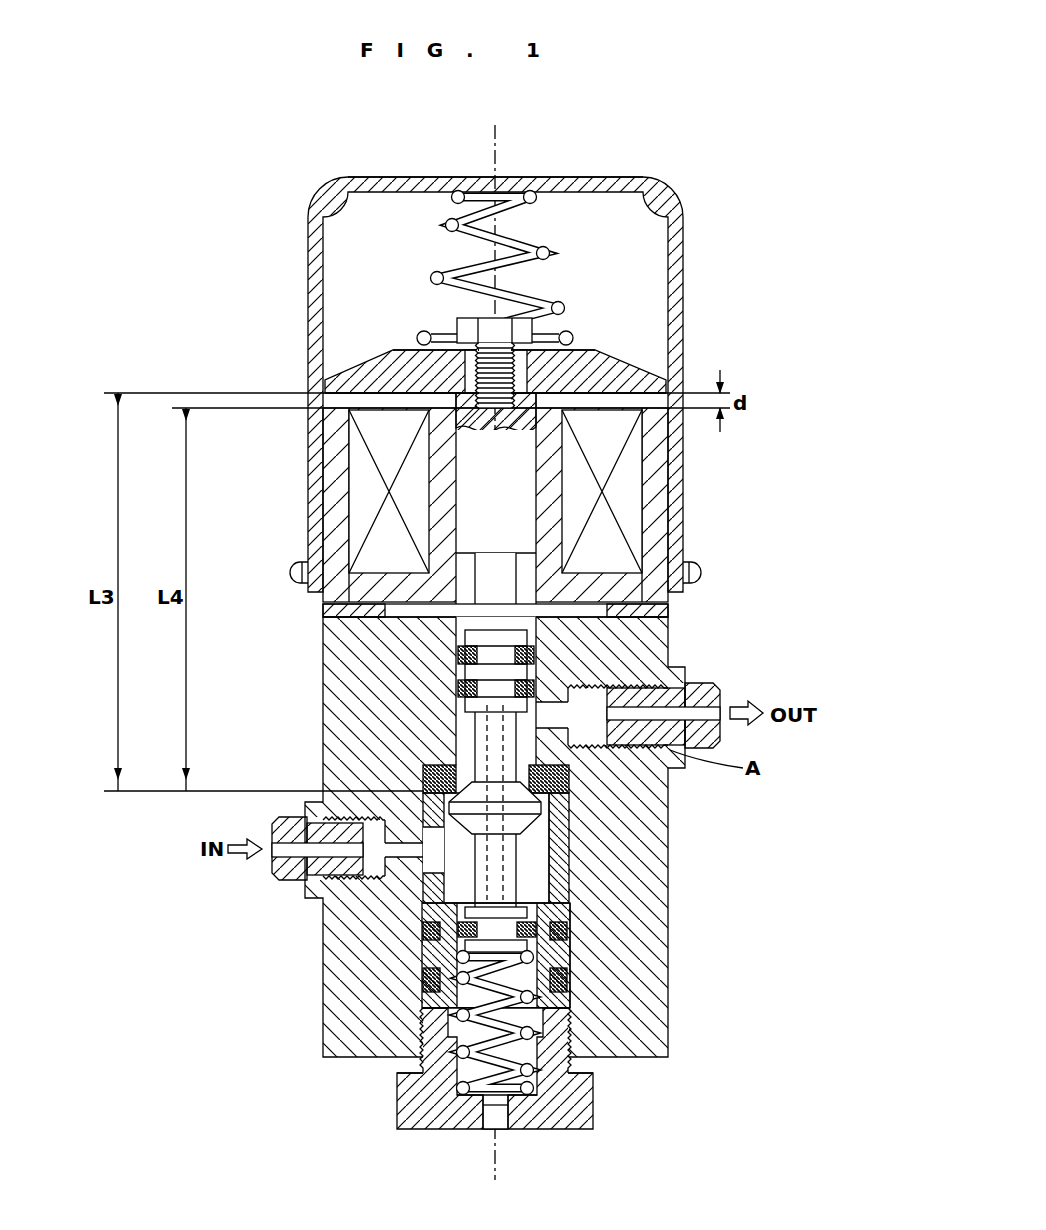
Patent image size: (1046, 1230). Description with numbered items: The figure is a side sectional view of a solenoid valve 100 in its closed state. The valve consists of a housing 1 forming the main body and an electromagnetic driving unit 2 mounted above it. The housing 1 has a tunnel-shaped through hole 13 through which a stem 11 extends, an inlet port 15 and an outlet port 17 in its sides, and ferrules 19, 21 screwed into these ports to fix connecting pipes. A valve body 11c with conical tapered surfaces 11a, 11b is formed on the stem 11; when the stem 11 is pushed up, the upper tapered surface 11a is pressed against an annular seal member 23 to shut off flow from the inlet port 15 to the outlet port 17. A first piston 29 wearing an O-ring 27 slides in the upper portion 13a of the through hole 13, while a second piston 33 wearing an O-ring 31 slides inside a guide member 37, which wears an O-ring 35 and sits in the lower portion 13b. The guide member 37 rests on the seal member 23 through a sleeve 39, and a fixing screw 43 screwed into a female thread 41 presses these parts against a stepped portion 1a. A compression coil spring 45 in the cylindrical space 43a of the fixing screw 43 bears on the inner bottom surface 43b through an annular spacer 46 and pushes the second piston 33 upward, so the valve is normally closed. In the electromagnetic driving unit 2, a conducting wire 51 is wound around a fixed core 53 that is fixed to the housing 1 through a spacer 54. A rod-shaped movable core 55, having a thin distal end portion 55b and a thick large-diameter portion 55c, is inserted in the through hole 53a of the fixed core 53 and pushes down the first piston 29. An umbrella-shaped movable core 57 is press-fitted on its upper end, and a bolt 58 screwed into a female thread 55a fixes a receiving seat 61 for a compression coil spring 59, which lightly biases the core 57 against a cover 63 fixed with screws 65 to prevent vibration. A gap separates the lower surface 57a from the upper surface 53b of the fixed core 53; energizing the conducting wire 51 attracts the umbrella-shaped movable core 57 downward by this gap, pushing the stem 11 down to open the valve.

The solenoid valve 100 is at (686, 130).
The housing 1 is at (672, 912).
The stepped portion 1a is at (435, 747).
The electromagnetic driving unit 2 is at (686, 300).
The stem 11 is at (405, 850).
The upper tapered surface 11a is at (542, 806).
The lower tapered surface 11b is at (520, 832).
The valve body 11c is at (542, 813).
The through hole 13 is at (537, 890).
The upper portion of the through hole 13a is at (540, 632).
The lower portion of the through hole 13b is at (565, 1000).
The inlet port 15 is at (396, 882).
The outlet port 17 is at (556, 702).
The ferrule 19 is at (283, 822).
The ferrule 21 is at (706, 742).
The seal member 23 is at (430, 777).
The O-ring 27 is at (462, 655).
The first piston 29 is at (462, 688).
The O-ring 31 is at (522, 930).
The second piston 33 is at (566, 934).
The O-ring 35 is at (567, 980).
The guide member 37 is at (540, 1035).
The sleeve 39 is at (551, 862).
The female thread 41 is at (572, 1048).
The fixing screw 43 is at (562, 1112).
The cylindrical space 43a is at (549, 1081).
The inner bottom surface 43b is at (516, 1108).
The compression coil spring 45 is at (452, 1022).
The annular spacer 46 is at (467, 1110).
The conducting wire 51 is at (600, 475).
The fixed core 53 is at (623, 513).
The through hole 53a is at (653, 493).
The upper surface of the fixed core 53b is at (640, 438).
The spacer 54 is at (674, 606).
The rod-shaped movable core 55 is at (542, 507).
The female thread 55a is at (472, 375).
The distal end portion 55b is at (507, 595).
The large-diameter portion 55c is at (513, 532).
The umbrella-shaped movable core 57 is at (600, 356).
The lower surface 57a is at (640, 384).
The bolt 58 is at (503, 332).
The compression coil spring 59 is at (547, 249).
The receiving seat 61 is at (573, 338).
The cover 63 is at (430, 177).
The screws 65 is at (293, 572).